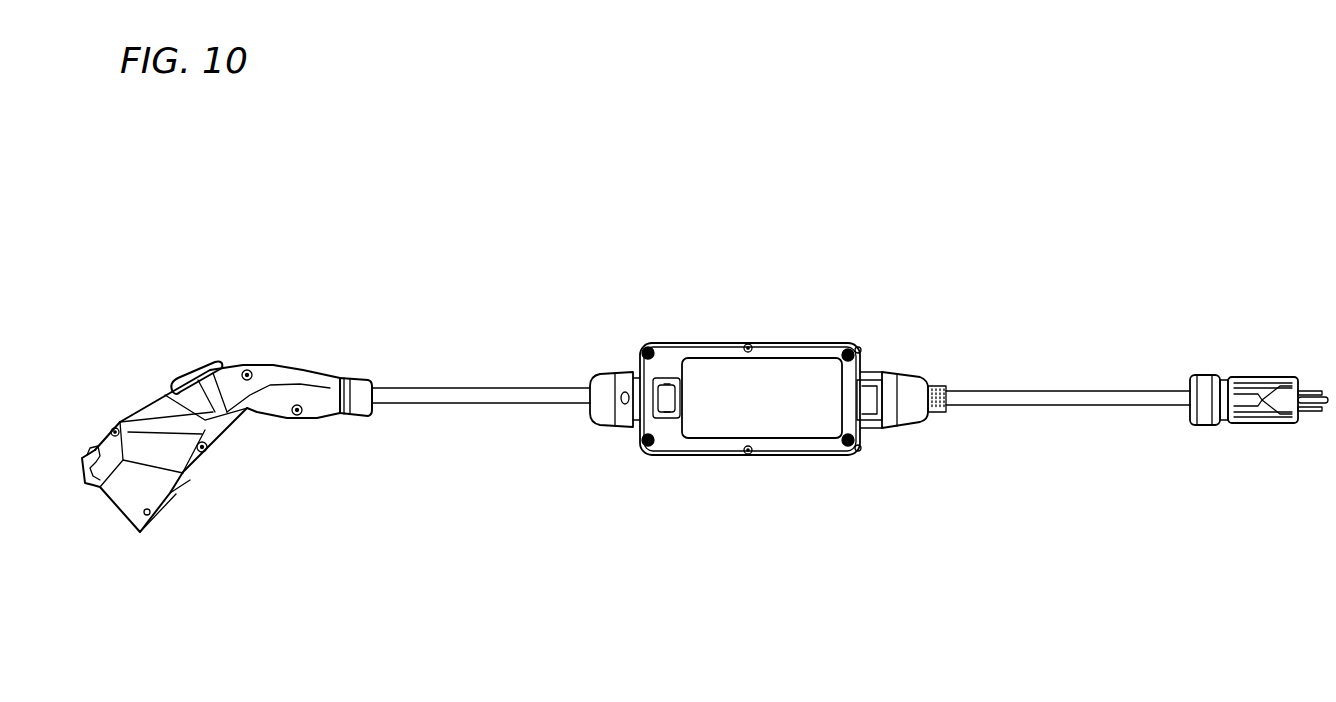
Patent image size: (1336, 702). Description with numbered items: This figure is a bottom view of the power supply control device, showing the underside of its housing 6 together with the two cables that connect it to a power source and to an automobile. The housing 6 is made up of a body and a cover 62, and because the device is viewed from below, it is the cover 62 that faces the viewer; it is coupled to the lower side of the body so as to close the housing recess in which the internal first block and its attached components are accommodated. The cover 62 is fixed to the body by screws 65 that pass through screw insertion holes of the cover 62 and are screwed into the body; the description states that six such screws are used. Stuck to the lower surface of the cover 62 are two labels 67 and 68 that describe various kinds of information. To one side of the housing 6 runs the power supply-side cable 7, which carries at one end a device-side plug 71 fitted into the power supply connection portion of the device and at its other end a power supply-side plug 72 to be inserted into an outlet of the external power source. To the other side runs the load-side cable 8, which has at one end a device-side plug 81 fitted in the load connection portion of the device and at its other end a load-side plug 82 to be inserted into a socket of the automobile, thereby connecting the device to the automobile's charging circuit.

The housing 6 is at (736, 399).
The power supply-side cable 7 is at (1072, 406).
The load-side cable 8 is at (472, 398).
The cover 62 is at (670, 437).
The screws 65 is at (642, 437).
The label 67 is at (668, 390).
The label 68 is at (788, 405).
The device-side plug 71 is at (907, 413).
The power supply-side plug 72 is at (1300, 378).
The device-side plug 81 is at (606, 413).
The load-side plug 82 is at (120, 515).